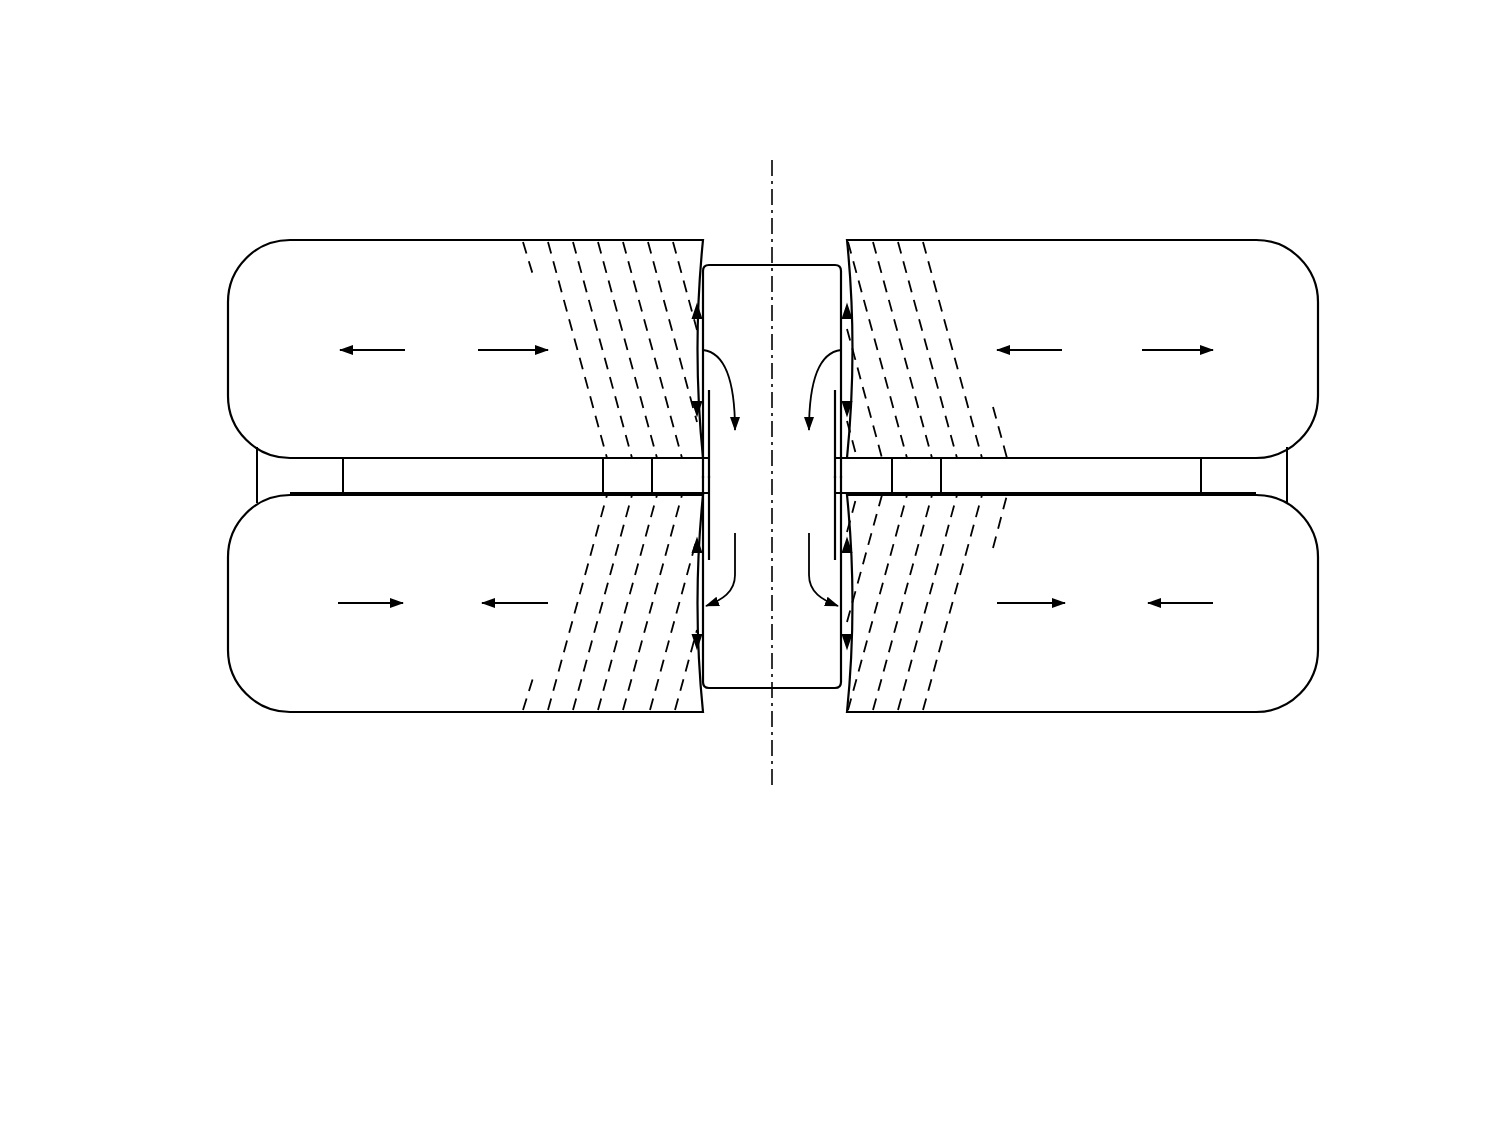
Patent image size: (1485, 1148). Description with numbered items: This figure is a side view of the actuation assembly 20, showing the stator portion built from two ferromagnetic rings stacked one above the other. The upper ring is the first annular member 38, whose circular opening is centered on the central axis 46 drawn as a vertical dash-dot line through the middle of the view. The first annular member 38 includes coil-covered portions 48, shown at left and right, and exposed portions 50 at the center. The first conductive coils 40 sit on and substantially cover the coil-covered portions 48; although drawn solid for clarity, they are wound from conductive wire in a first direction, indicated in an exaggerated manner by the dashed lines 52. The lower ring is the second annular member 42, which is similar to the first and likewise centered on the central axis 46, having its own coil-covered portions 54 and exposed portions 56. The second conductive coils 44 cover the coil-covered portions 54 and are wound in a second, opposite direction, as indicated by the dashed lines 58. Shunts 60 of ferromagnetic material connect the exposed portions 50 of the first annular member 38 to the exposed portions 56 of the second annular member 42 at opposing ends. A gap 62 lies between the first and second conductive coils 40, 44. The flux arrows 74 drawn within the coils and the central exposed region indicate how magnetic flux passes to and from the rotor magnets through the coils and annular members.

The actuation assembly 20 is at (203, 213).
The first annular member 38 is at (1320, 268).
The first conductive coils 40 is at (380, 245).
The second annular member 42 is at (1340, 585).
The second conductive coils 44 is at (470, 714).
The central axis 46 is at (770, 172).
The coil-covered portions 48 is at (460, 276).
The exposed portions 50 is at (810, 265).
The dashed lines 52 is at (640, 246).
The coil-covered portions 54 is at (380, 680).
The exposed portions 56 is at (805, 690).
The dashed lines 58 is at (630, 690).
The shunts 60 is at (740, 265).
The gap 62 is at (445, 476).
The flux arrows 74 is at (372, 350).